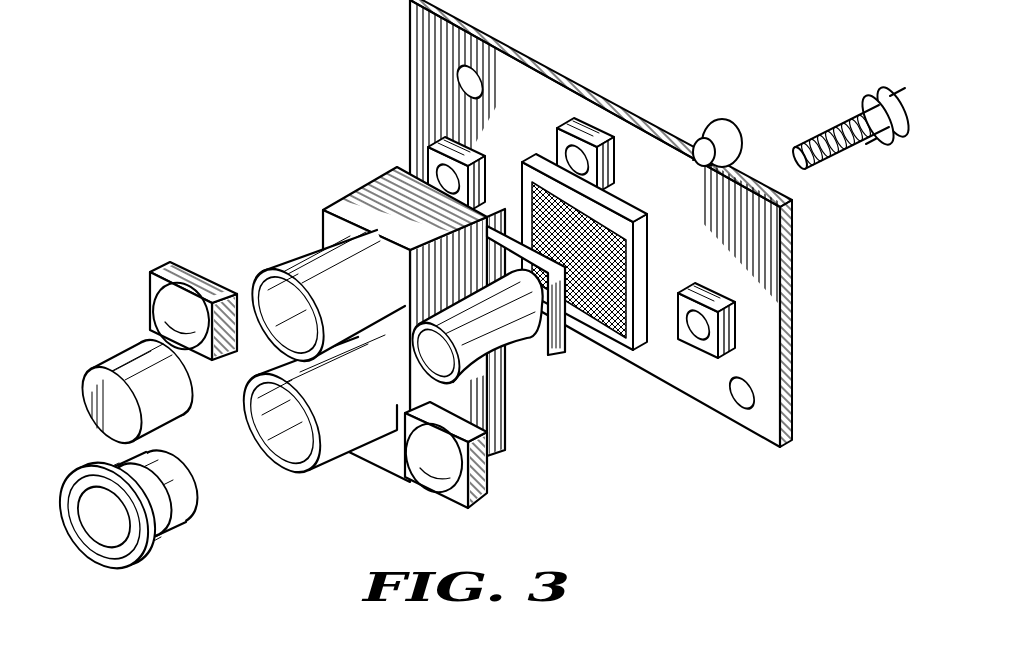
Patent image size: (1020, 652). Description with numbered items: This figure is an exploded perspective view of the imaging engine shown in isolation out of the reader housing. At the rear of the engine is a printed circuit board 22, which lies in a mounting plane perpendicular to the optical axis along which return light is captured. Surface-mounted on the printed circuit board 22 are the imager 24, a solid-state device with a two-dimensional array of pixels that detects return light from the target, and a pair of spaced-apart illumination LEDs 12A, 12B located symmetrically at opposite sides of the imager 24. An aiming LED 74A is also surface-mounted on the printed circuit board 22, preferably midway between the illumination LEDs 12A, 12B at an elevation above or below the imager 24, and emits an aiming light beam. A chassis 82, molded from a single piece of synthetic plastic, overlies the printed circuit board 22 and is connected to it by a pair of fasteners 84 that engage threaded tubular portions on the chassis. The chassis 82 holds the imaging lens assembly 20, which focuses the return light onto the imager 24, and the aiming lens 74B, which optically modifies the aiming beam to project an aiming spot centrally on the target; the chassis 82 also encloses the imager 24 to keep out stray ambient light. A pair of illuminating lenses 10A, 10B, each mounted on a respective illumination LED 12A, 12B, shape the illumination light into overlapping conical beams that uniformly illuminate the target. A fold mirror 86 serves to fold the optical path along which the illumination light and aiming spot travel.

The printed circuit board 22 is at (548, 62).
The illumination LED 12B is at (443, 145).
The aiming LED 74A is at (612, 167).
The illumination LED 12A is at (738, 333).
The fastener 84 is at (727, 127).
The imager 24 is at (608, 323).
The chassis 82 is at (367, 182).
The fold mirror 86 is at (553, 357).
The illuminating lens 10A is at (483, 468).
The illuminating lens 10B is at (160, 262).
The aiming lens 74B is at (122, 353).
The imaging lens assembly 20 is at (173, 527).